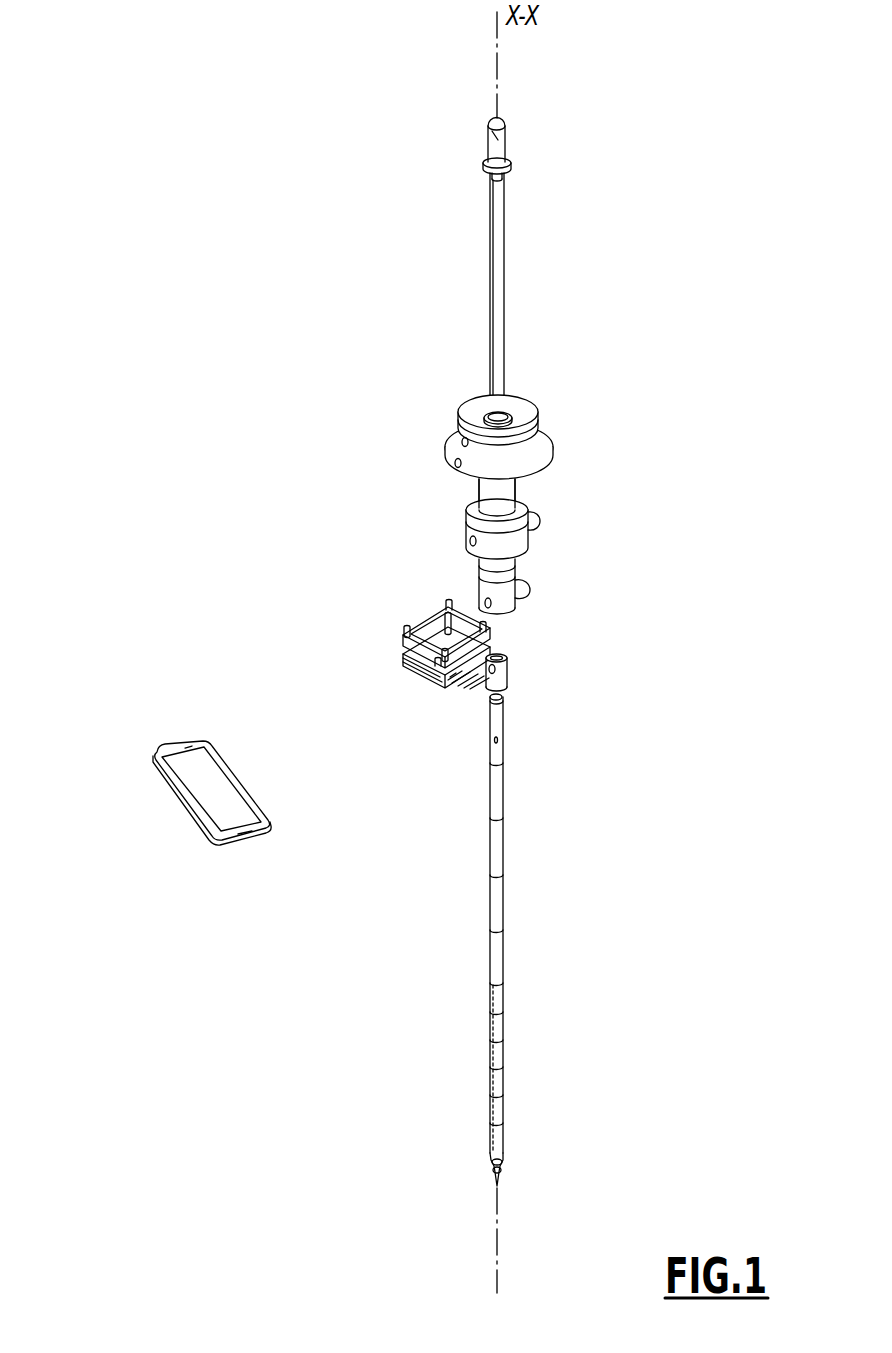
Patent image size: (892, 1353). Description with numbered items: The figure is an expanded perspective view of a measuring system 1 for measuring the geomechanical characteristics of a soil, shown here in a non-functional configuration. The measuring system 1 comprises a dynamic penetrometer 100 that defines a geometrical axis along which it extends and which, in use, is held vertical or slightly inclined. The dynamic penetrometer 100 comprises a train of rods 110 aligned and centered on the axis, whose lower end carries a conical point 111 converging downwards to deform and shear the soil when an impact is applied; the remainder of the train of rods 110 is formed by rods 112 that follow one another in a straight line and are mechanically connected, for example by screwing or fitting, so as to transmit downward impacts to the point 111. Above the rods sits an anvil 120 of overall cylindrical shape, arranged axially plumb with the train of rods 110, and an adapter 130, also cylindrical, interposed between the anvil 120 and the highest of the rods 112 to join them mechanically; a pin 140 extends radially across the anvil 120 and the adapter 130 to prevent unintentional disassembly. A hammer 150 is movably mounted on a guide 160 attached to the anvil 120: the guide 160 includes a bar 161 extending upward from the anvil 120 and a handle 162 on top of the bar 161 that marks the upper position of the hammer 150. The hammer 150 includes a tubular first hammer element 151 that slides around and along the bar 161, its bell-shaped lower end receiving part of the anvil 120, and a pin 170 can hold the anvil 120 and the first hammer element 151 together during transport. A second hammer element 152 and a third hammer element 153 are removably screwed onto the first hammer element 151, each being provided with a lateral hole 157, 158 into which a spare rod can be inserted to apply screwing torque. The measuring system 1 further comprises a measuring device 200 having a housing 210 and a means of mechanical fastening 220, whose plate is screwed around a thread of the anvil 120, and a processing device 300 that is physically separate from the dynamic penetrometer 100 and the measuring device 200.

The measuring system 1 is at (133, 508).
The dynamic penetrometer 100 is at (452, 522).
The train of rods 110 is at (603, 940).
The point 111 is at (505, 1165).
The rods 112 is at (503, 797).
The anvil 120 is at (522, 610).
The adapter 130 is at (512, 673).
The pin 140 is at (531, 589).
The hammer 150 is at (544, 474).
The first hammer element 151 is at (512, 492).
The second hammer element 152 is at (544, 457).
The third hammer element 153 is at (522, 410).
The lateral hole 157 is at (455, 464).
The lateral hole 158 is at (462, 442).
The guide 160 is at (579, 294).
The bar 161 is at (499, 276).
The handle 162 is at (506, 133).
The pin 170 is at (534, 520).
The measuring device 200 is at (313, 626).
The housing 210 is at (402, 672).
The means of mechanical fastening 220 is at (466, 603).
The processing device 300 is at (190, 722).